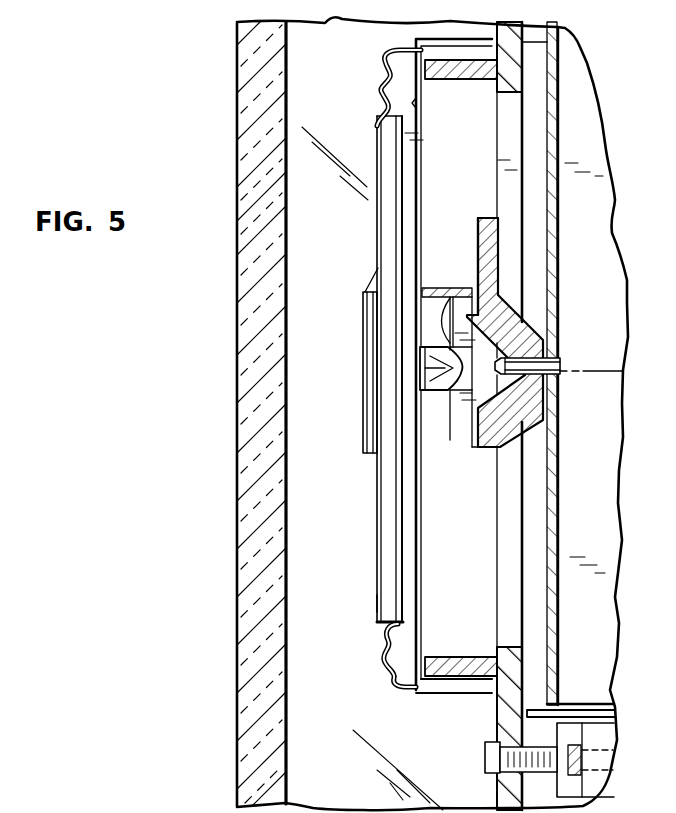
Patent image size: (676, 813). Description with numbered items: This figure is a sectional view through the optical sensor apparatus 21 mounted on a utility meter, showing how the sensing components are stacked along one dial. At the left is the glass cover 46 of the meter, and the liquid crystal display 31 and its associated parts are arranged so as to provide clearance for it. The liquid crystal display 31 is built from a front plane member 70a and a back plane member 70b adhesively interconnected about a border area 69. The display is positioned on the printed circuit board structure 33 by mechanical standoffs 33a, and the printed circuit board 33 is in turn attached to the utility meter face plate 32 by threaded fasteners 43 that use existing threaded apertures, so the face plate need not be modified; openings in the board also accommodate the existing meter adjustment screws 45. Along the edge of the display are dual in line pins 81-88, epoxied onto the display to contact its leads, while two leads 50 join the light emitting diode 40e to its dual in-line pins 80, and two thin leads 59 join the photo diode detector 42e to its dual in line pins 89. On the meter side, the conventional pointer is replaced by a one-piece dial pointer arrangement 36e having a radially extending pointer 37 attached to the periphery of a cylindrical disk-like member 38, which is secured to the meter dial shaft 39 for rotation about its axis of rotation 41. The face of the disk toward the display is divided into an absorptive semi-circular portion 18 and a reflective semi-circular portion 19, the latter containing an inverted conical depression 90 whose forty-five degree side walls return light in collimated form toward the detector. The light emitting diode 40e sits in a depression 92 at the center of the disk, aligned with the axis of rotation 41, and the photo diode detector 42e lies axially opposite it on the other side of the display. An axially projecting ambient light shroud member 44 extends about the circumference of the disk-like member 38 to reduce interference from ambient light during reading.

The glass cover 46 is at (237, 454).
The front plane member 70a is at (403, 537).
The back plane member 70b is at (377, 562).
The border area 69 is at (396, 623).
The liquid crystal display 31 is at (376, 604).
The leads 50 is at (424, 181).
The dual in line pins 89 is at (385, 78).
The dual in line pins 81-88 is at (400, 50).
The dual in-line pins 80 is at (403, 690).
The optical sensor apparatus 21 is at (367, 707).
The printed circuit board structure 33 is at (496, 146).
The mechanical standoffs 33a is at (487, 73).
The utility meter face plate 32 is at (547, 108).
The radially extending pointer 37 is at (478, 218).
The cylindrical disk-like member 38 is at (497, 444).
The dial pointer arrangement 36e is at (487, 450).
The inverted conical depression 90 is at (463, 415).
The meter dial shaft 39 is at (541, 371).
The axis of rotation 41 is at (603, 373).
The ambient light shroud member 44 is at (432, 288).
The reflective semi-circular portion 19 is at (451, 300).
The absorptive semi-circular portion 18 is at (444, 289).
The light emitting diode 40e is at (470, 353).
The depression 92 is at (470, 383).
The photo diode detector 42e is at (366, 336).
The leads 59 is at (370, 287).
The meter adjustment screws 45 is at (580, 749).
The threaded fasteners 43 is at (485, 756).